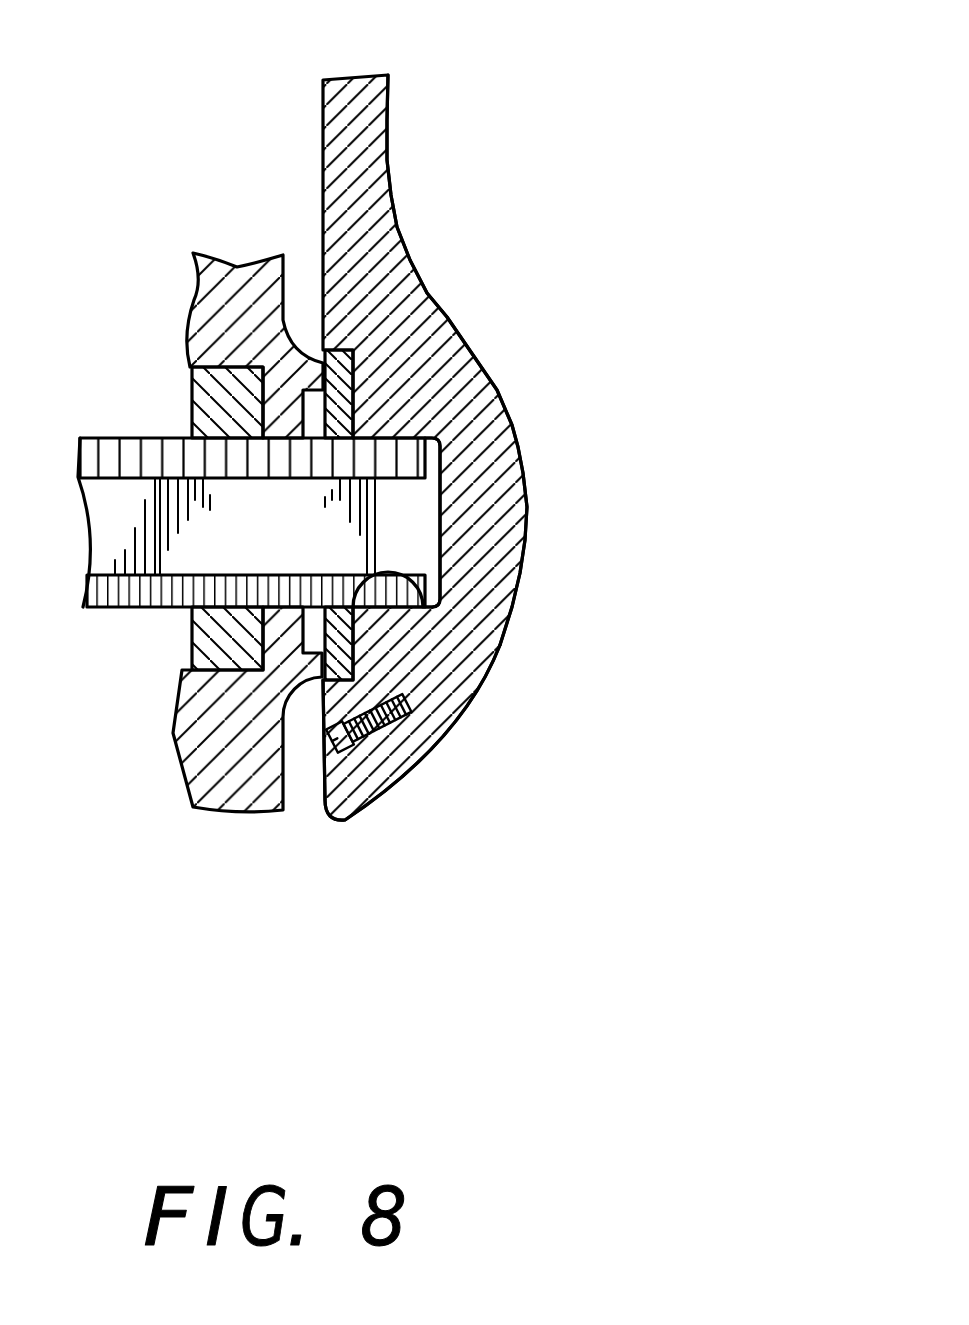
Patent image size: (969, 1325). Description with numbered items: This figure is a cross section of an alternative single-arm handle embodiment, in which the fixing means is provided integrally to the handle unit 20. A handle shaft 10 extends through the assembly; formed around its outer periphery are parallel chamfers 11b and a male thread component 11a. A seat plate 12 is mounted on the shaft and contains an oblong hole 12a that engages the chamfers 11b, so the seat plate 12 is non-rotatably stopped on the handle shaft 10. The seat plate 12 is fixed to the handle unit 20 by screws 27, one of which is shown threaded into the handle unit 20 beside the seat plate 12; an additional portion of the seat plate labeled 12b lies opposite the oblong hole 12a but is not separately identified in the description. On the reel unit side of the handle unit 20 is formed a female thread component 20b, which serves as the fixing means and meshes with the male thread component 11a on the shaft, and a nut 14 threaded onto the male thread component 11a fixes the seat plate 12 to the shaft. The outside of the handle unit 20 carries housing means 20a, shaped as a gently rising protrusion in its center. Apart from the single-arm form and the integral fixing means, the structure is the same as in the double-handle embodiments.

The handle shaft 10 is at (150, 618).
The male thread component 11a is at (410, 437).
The parallel chamfers 11b is at (385, 528).
The seat plate 12 is at (330, 362).
The oblong hole 12a is at (340, 440).
The lower tongue of collar 12b is at (397, 750).
The nut 14 is at (467, 603).
The handle unit 20 is at (391, 140).
The housing means 20a is at (513, 430).
The female thread component 20b is at (415, 610).
The screws 27 is at (347, 747).